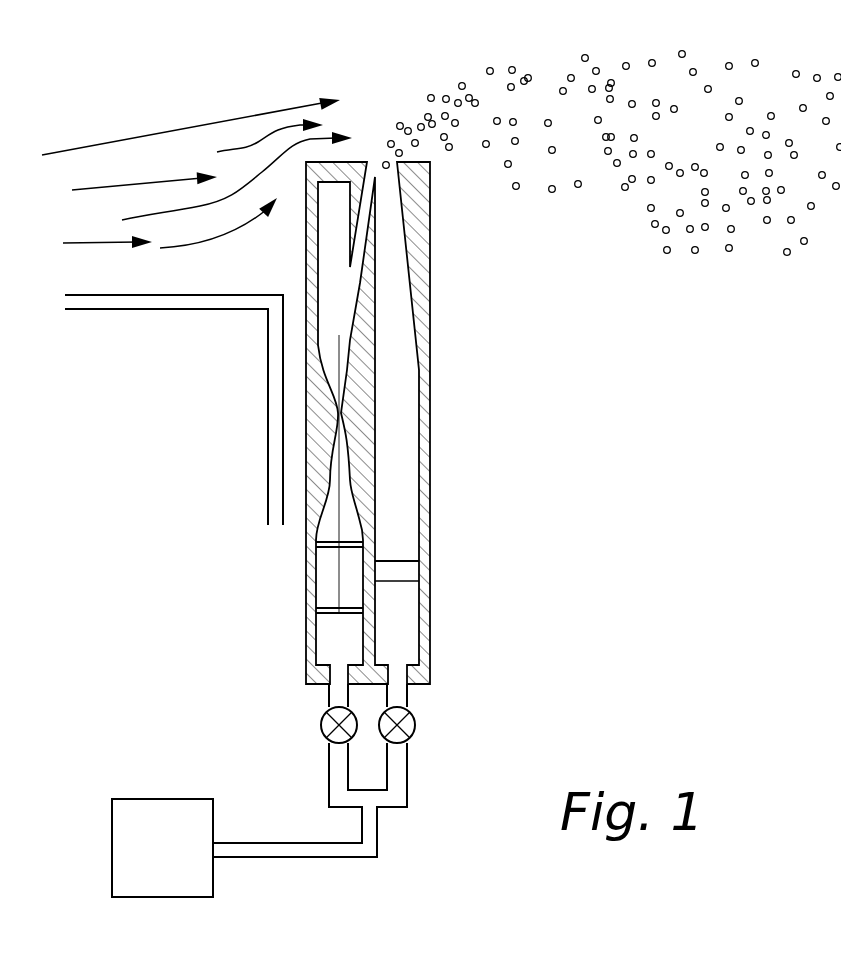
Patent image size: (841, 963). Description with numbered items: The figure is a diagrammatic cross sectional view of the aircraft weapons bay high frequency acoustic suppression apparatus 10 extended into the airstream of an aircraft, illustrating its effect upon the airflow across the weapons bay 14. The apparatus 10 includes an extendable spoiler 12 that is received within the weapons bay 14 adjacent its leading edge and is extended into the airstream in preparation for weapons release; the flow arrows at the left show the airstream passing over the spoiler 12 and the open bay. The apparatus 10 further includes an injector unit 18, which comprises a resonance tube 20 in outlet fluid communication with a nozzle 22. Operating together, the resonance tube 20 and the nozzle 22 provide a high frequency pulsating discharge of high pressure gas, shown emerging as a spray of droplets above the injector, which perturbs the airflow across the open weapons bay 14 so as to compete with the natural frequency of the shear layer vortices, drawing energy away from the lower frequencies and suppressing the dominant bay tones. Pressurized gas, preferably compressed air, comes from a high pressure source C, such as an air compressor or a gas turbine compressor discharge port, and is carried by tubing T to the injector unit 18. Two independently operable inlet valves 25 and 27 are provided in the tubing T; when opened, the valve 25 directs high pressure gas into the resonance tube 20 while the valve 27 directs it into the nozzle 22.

The aircraft weapons bay high frequency acoustic suppression apparatus 10 is at (175, 448).
The extendable spoiler 12 is at (430, 268).
The weapons bay 14 is at (283, 380).
The injector unit 18 is at (446, 349).
The resonance tube 20 is at (308, 330).
The nozzle 22 is at (444, 470).
The inlet valve 25 is at (320, 722).
The inlet valve 27 is at (415, 729).
The high pressure source C is at (161, 799).
The tubing T is at (314, 858).